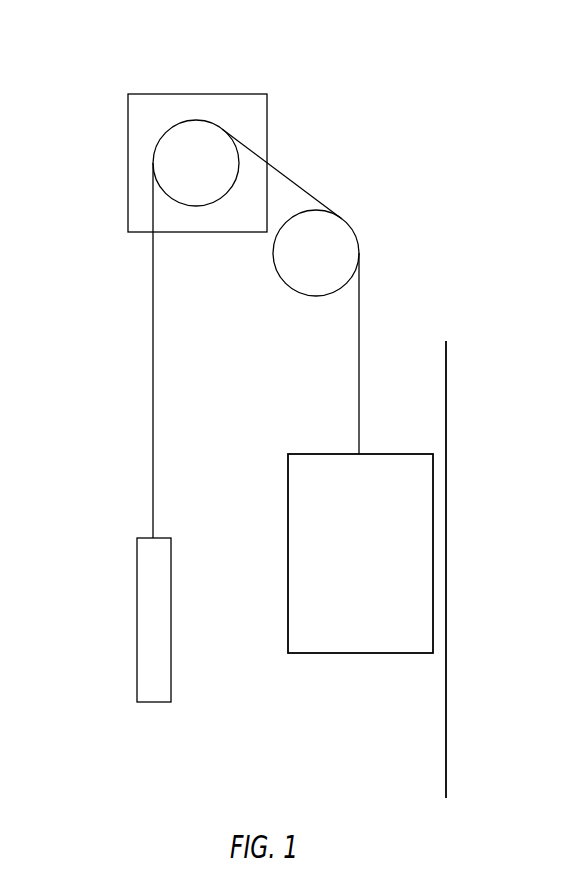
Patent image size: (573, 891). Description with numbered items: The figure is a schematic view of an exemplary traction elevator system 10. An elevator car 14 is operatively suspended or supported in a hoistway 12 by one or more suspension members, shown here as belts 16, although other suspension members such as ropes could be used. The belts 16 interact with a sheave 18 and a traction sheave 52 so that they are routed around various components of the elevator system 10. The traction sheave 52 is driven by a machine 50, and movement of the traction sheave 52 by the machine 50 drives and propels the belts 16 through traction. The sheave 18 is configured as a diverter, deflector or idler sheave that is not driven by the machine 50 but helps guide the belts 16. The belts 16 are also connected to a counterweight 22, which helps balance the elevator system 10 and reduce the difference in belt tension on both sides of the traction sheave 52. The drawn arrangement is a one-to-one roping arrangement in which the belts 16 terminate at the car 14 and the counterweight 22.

The traction elevator system 10 is at (311, 40).
The hoistway 12 is at (446, 375).
The elevator car 14 is at (370, 566).
The belts 16 is at (147, 385).
The sheave 18 is at (333, 265).
The counterweight 22 is at (163, 634).
The machine 50 is at (128, 164).
The traction sheave 52 is at (208, 175).